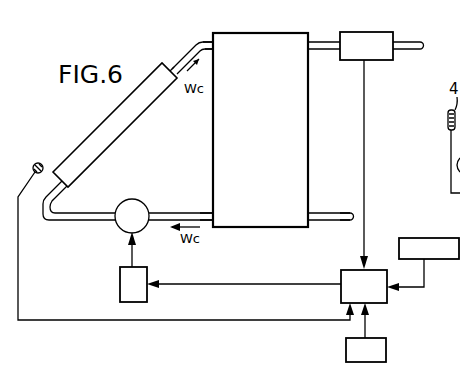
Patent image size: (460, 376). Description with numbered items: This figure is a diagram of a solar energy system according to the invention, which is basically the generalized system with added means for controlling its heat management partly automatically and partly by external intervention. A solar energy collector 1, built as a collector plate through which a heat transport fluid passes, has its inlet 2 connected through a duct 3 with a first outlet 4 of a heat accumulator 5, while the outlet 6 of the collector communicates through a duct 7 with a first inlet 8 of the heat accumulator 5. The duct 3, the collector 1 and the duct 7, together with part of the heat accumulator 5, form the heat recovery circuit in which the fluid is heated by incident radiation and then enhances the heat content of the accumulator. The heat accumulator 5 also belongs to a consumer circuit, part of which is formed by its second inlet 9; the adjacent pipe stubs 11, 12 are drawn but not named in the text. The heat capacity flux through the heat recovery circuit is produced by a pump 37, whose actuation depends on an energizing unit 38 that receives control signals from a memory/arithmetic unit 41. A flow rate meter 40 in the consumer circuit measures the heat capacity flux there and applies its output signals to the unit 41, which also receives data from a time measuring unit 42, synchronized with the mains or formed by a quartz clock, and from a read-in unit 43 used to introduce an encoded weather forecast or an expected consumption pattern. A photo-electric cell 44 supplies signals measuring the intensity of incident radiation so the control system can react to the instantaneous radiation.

The solar energy collector 1 is at (110, 123).
The inlet 2 is at (63, 189).
The duct 3 is at (175, 212).
The first outlet 4 is at (205, 198).
The heat accumulator 5 is at (278, 135).
The outlet 6 is at (173, 61).
The duct 7 is at (185, 58).
The first inlet 8 is at (209, 44).
The second inlet 9 is at (313, 213).
The hot water pipe 11 is at (333, 52).
The cold water inlet 12 is at (338, 214).
The pump 37 is at (144, 224).
The energizing unit 38 is at (144, 298).
The flow rate meter 40 is at (383, 53).
The memory/arithmetic unit 41 is at (381, 296).
The time measuring unit 42 is at (382, 359).
The read-in unit 43 is at (424, 225).
The photo-electric cell 44 is at (41, 163).